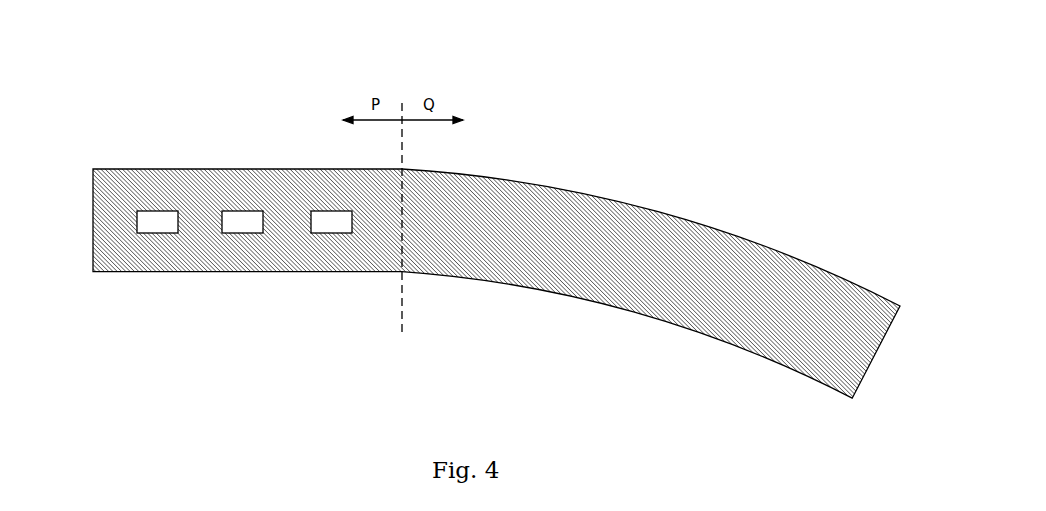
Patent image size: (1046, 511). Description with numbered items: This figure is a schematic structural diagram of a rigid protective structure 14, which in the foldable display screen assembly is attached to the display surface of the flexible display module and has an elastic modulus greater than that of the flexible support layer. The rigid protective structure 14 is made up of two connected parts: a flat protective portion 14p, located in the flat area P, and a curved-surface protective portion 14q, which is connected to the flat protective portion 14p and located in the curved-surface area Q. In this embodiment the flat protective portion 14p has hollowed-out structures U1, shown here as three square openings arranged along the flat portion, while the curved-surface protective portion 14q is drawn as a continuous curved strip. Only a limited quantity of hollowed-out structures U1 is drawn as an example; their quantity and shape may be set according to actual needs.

The rigid protective structure 14 is at (461, 256).
The flat protective portion 14p is at (247, 212).
The curved-surface protective portion 14q is at (486, 190).
The hollowed-out structure U1 is at (243, 227).